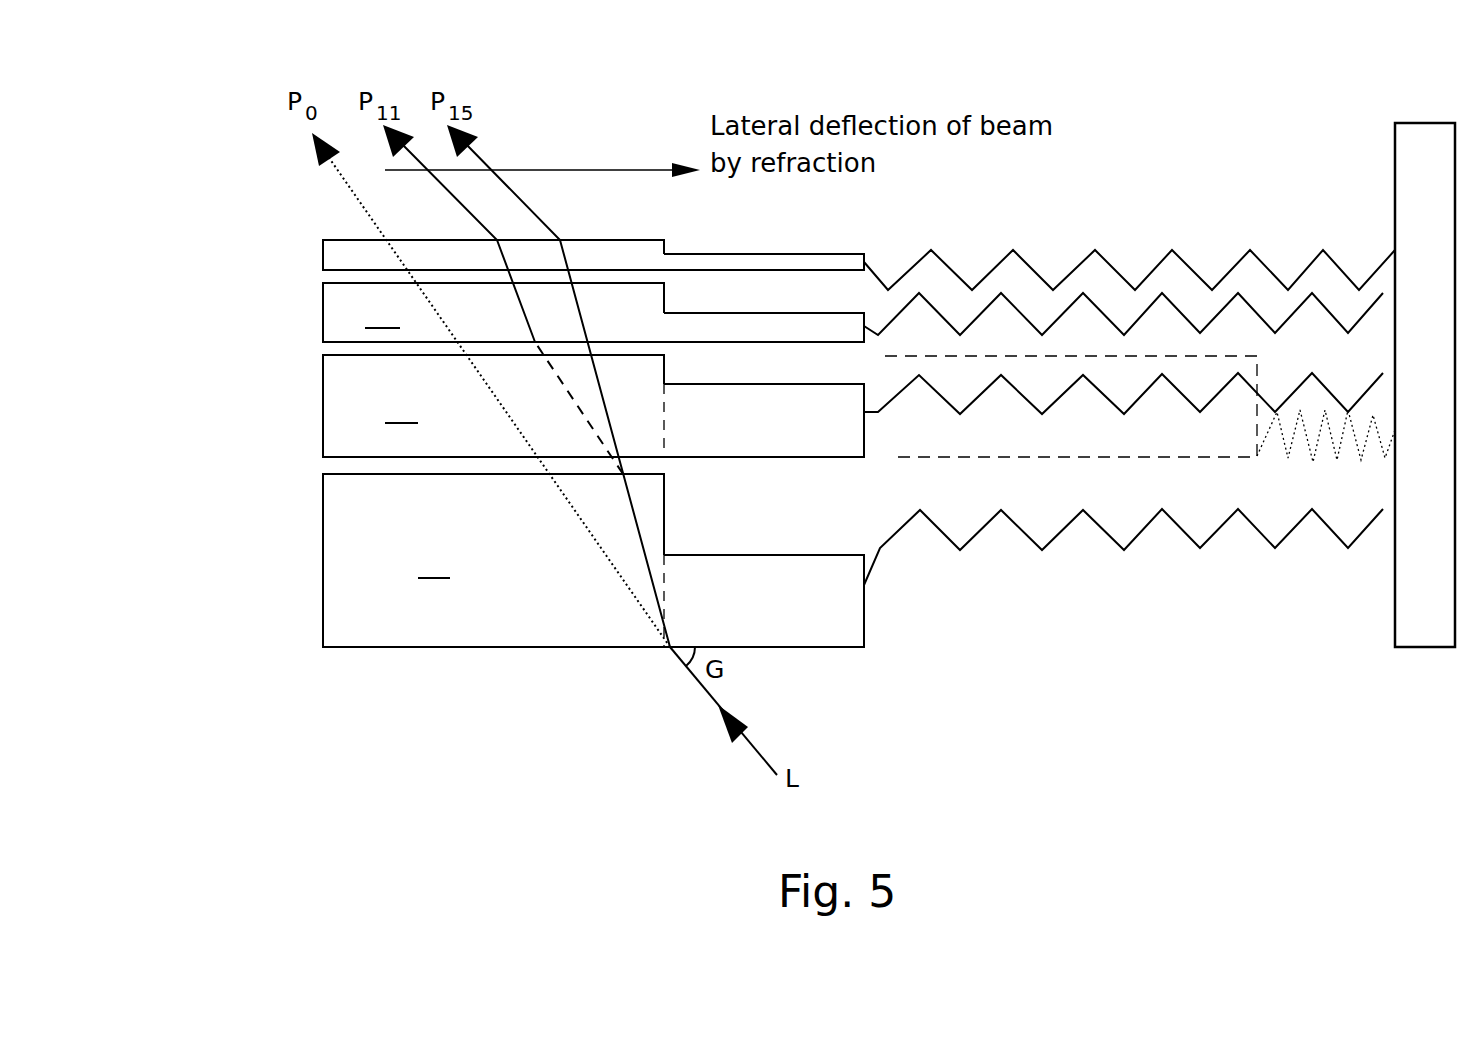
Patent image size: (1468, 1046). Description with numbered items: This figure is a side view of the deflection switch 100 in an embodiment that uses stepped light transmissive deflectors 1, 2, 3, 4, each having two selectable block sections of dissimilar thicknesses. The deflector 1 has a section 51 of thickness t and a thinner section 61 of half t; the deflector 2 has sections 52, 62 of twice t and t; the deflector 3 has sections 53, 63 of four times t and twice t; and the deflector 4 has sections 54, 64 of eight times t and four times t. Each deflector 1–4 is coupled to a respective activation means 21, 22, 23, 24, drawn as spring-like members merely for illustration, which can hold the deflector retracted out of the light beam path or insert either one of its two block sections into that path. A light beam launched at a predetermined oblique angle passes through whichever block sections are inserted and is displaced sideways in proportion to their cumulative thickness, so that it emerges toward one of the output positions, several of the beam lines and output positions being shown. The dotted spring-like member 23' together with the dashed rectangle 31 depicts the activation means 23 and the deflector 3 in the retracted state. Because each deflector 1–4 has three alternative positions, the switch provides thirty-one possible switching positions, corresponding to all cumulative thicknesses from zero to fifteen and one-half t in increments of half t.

The deflection switch 100 is at (235, 130).
The light transmissive deflector 1 is at (560, 221).
The light transmissive deflector 2 is at (577, 267).
The light transmissive deflector 3 is at (561, 440).
The light transmissive deflector 4 is at (572, 560).
The block section 51 is at (469, 221).
The block section 52 is at (493, 312).
The block section 53 is at (493, 406).
The block section 54 is at (493, 560).
The block section 61 is at (764, 238).
The block section 62 is at (780, 267).
The block section 63 is at (764, 455).
The block section 64 is at (775, 562).
The activation means 21 is at (1129, 171).
The activation means 22 is at (1123, 215).
The activation means 23 is at (1123, 260).
The retracted spring-like member 23' is at (1310, 568).
The activation means 24 is at (1123, 614).
The displacement range of third plate 31 is at (1020, 455).